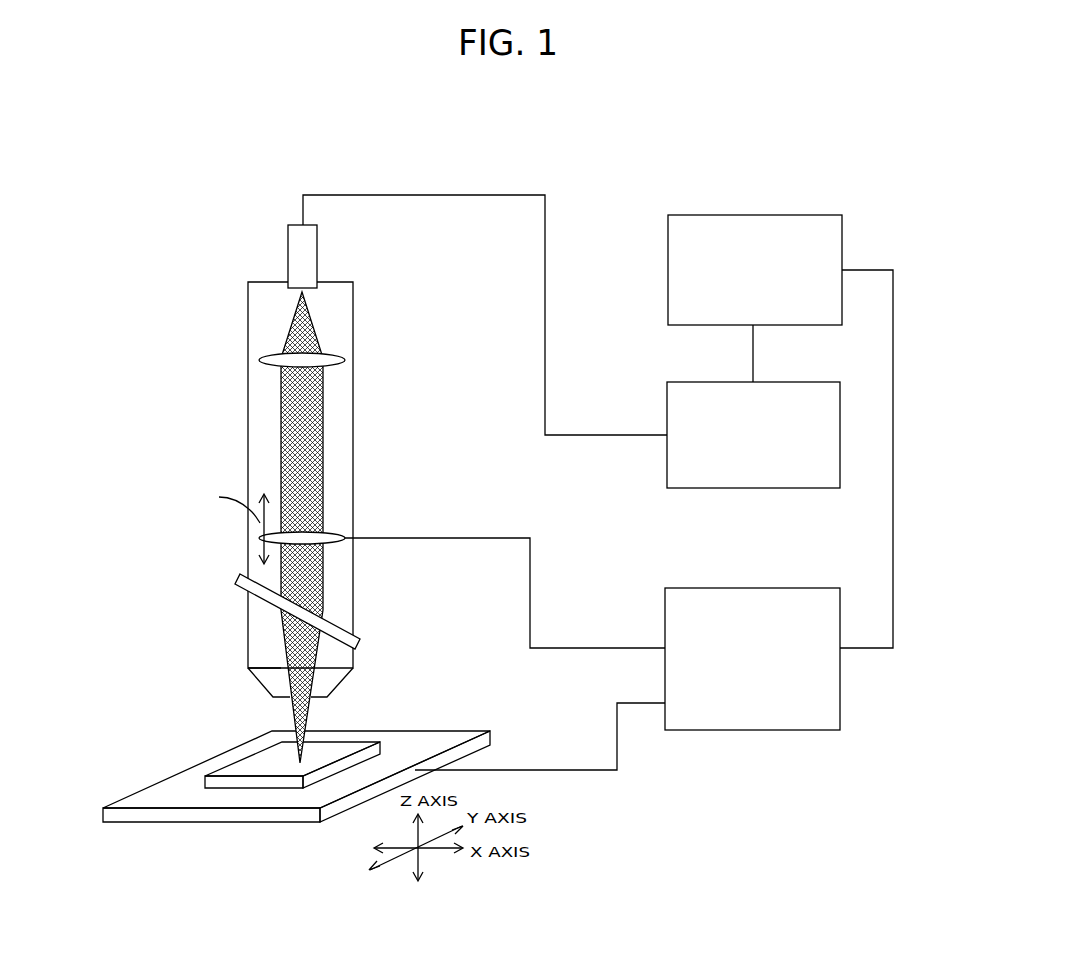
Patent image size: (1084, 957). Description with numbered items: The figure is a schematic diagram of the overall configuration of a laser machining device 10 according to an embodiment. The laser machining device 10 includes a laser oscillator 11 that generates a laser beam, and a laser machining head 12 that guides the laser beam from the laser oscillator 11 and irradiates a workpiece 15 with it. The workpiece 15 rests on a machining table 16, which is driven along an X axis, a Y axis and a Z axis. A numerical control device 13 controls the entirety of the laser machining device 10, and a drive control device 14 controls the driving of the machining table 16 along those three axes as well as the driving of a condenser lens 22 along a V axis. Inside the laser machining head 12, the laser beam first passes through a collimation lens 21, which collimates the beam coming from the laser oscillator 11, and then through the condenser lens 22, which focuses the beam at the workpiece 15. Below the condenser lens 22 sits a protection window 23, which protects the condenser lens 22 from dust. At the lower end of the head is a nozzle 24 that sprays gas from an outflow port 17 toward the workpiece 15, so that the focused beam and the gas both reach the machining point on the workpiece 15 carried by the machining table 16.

The laser machining device 10 is at (758, 158).
The laser oscillator 11 is at (703, 490).
The laser machining head 12 is at (293, 478).
The numerical control device 13 is at (805, 215).
The drive control device 14 is at (797, 588).
The workpiece 15 is at (272, 760).
The machining table 16 is at (178, 798).
The outflow port 17 is at (282, 701).
The collimation lens 21 is at (333, 356).
The condenser lens 22 is at (333, 528).
The protection window 23 is at (334, 622).
The nozzle 24 is at (340, 686).